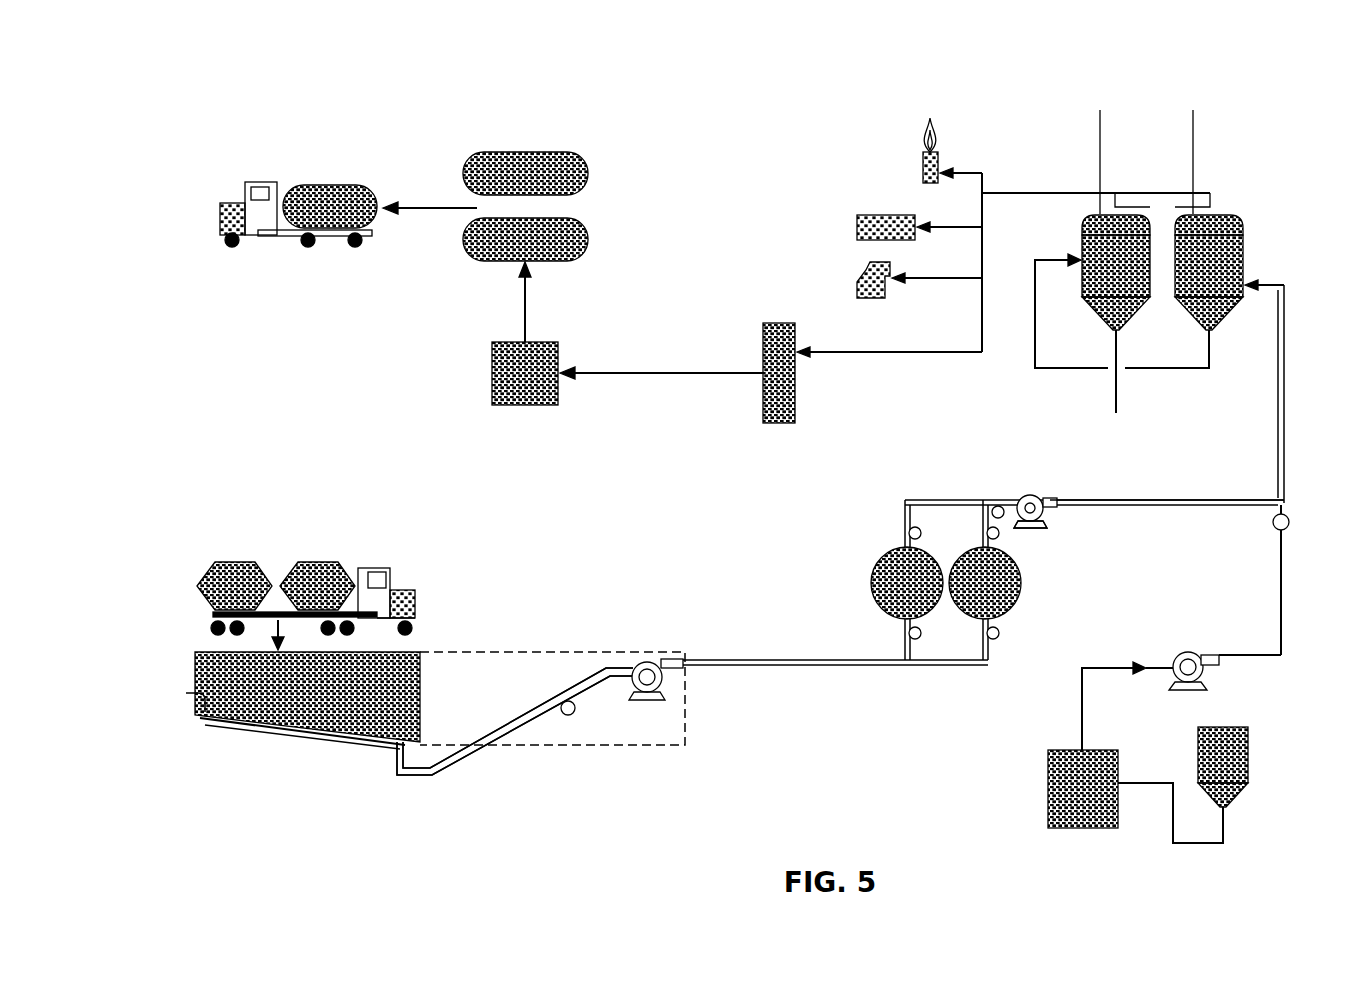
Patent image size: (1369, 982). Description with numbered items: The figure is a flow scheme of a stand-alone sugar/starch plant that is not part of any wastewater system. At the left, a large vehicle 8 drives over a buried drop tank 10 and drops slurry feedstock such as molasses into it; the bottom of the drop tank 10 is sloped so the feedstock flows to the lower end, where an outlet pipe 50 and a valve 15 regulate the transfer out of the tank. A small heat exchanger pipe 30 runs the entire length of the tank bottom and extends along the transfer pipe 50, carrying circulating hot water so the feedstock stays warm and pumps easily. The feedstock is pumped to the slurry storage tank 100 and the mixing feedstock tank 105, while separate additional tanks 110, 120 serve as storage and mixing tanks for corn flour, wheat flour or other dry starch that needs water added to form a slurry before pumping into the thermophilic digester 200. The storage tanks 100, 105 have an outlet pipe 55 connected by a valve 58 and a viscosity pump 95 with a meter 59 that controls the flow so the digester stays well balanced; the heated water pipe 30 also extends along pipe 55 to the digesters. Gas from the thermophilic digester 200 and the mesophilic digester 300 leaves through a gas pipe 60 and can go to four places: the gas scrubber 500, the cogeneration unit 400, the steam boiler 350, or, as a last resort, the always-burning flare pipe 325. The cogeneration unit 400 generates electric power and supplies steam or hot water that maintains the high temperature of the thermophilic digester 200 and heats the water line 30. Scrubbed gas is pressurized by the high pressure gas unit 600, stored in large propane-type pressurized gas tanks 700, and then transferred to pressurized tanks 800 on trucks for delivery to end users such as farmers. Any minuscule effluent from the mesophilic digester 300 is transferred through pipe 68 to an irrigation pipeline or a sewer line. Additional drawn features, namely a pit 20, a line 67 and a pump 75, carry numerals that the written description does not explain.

The large vehicle 8 is at (375, 564).
The drop tank 10 is at (422, 705).
The valve 15 is at (570, 716).
The pit 20 is at (650, 748).
The heat exchanger pipe 30 is at (1280, 410).
The outlet pipe 50 is at (470, 755).
The outlet pipe 55 is at (1137, 508).
The valve 58 is at (922, 533).
The meter 59 is at (1012, 500).
The gas pipe 60 is at (640, 377).
The digester outlet line 67 is at (1163, 372).
The pipe 68 is at (1112, 395).
The pump 75 is at (1192, 651).
The viscosity pump 95 is at (1030, 532).
The feedstock slurry storage tank 100 is at (871, 583).
The mixing feedstock tank 105 is at (1022, 583).
The additional tank 110 is at (1048, 767).
The additional tank 120 is at (1250, 745).
The thermophilic digester 200 is at (1227, 316).
The mesophilic digester 300 is at (1101, 316).
The flare pipe 325 is at (938, 157).
The steam boiler 350 is at (915, 215).
The cogeneration unit 400 is at (888, 298).
The gas scrubber 500 is at (797, 394).
The high pressure gas unit 600 is at (527, 407).
The pressurized gas tanks 700 is at (590, 173).
The pressurized tanks on trucks 800 is at (328, 185).